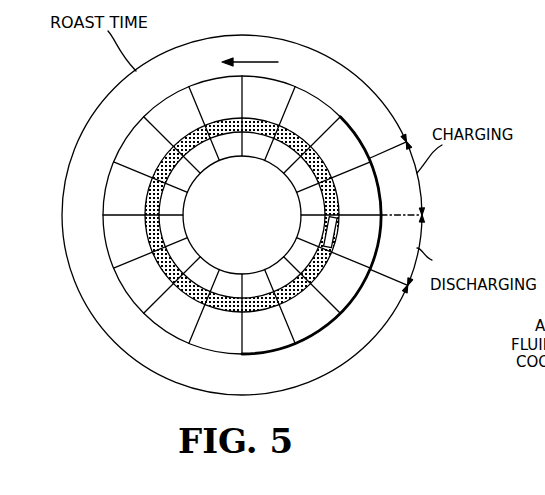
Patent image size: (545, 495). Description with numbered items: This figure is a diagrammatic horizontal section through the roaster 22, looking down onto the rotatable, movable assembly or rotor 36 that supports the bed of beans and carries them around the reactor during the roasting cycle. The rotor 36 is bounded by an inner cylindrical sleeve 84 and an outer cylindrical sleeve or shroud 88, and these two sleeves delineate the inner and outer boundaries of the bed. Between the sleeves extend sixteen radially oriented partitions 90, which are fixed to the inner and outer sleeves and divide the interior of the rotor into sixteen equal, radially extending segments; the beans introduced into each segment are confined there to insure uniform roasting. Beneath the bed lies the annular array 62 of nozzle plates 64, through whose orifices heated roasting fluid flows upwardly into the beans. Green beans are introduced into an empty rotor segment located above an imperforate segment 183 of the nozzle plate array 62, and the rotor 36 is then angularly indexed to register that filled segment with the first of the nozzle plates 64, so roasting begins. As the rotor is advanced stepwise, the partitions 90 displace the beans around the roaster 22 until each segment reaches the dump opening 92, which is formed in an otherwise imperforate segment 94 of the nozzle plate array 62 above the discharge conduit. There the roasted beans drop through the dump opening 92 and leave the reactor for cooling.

The roaster 22 is at (80, 94).
The rotor 36 is at (126, 306).
The annular array 62 is at (144, 160).
The nozzle plates 64 is at (217, 120).
The inner cylindrical sleeve 84 is at (157, 194).
The outer cylindrical sleeve 88 is at (111, 263).
The partitions 90 is at (157, 313).
The dump opening 92 is at (334, 226).
The imperforate segment 94 is at (336, 243).
The imperforate segment 183 is at (329, 183).